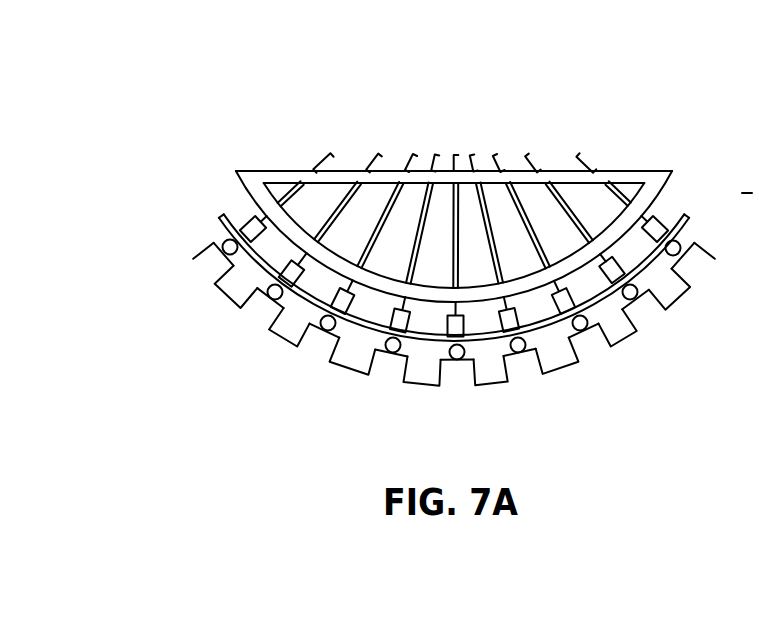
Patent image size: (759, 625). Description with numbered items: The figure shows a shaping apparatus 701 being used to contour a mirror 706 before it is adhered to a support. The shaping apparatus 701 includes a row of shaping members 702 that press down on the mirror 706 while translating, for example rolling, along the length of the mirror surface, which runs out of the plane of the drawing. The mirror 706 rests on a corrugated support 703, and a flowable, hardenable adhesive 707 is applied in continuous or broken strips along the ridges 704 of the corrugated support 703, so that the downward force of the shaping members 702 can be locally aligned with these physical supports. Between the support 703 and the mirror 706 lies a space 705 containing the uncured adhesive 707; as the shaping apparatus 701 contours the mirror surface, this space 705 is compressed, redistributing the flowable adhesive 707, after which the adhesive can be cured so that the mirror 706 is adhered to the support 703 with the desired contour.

The shaping apparatus 701 is at (355, 154).
The shaping members 702 is at (249, 221).
The corrugated support 703 is at (218, 287).
The ridges 704 is at (332, 333).
The space 705 is at (643, 282).
The mirror 706 is at (220, 217).
The flowable, hardenable adhesive 707 is at (271, 299).